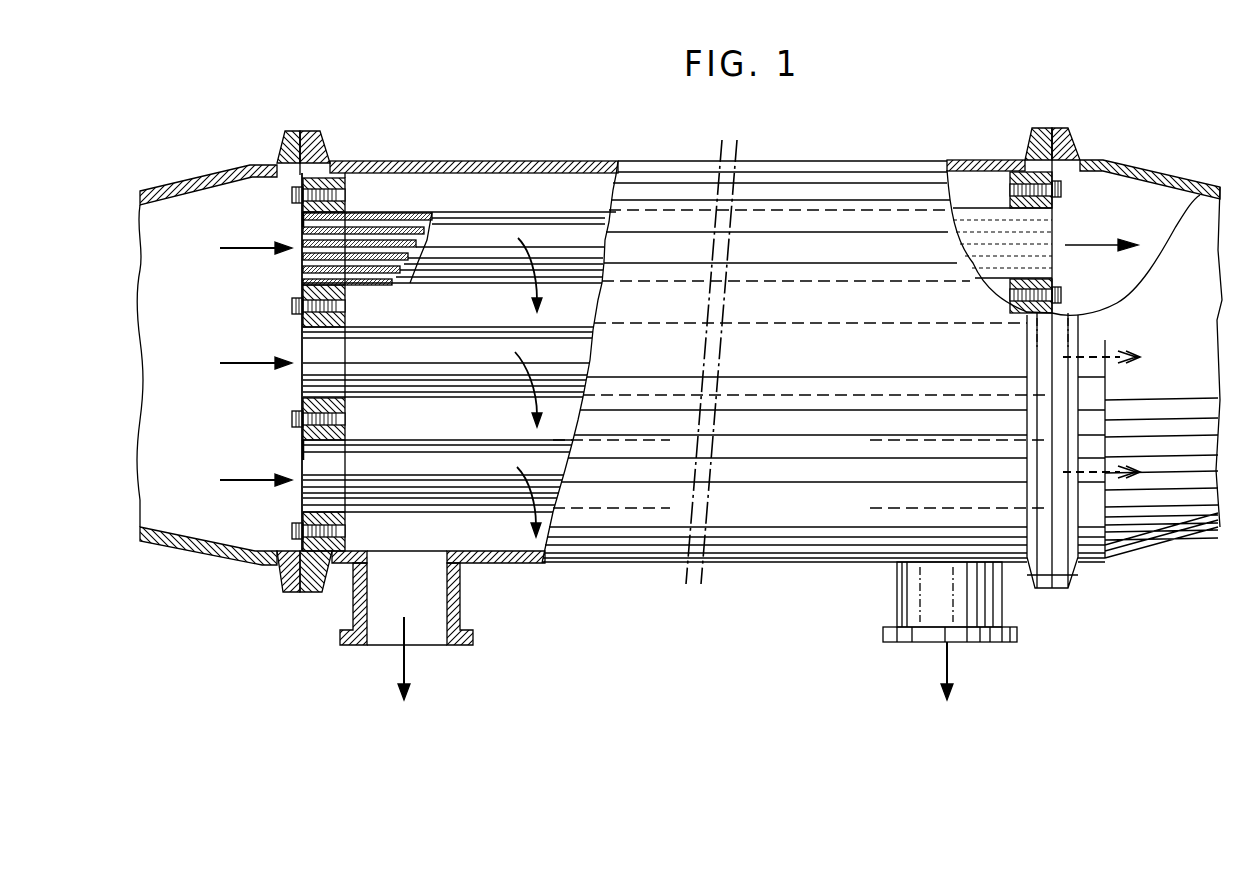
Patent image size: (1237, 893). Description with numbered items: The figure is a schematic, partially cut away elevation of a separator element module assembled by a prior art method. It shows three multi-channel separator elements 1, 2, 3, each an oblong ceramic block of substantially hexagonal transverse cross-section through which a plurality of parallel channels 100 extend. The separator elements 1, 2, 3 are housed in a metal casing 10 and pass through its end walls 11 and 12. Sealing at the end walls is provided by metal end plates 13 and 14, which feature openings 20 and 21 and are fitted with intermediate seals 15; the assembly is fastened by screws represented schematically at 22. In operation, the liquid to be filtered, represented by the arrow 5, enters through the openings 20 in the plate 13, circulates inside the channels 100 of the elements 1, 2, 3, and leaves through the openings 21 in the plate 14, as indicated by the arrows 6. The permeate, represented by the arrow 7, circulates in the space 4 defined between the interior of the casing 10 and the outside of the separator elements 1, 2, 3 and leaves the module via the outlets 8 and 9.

The multi-channel separator element 1 is at (465, 233).
The multi-channel separator element 2 is at (453, 353).
The multi-channel separator element 3 is at (450, 462).
The space 4 is at (557, 190).
The arrow 5 is at (245, 251).
The arrows 6 is at (1100, 246).
The arrow 7 is at (540, 258).
The outlet 8 is at (360, 605).
The outlet 9 is at (933, 595).
The metal casing 10 is at (962, 171).
The end wall 11 is at (348, 520).
The end wall 12 is at (1010, 197).
The metal end plate 13 is at (302, 208).
The metal end plate 14 is at (1053, 206).
The intermediate seal 15 is at (347, 207).
The opening 20 is at (301, 218).
The opening 21 is at (1038, 212).
The screw 22 is at (295, 197).
The parallel channel 100 is at (360, 273).